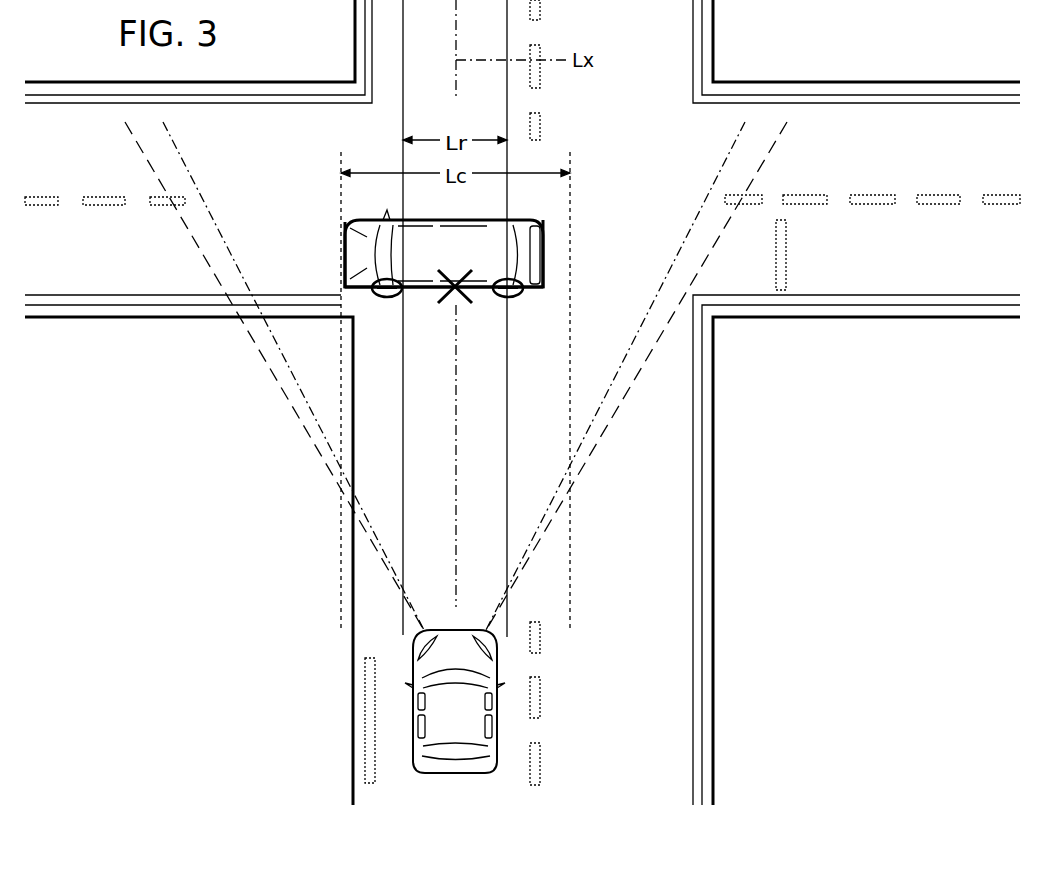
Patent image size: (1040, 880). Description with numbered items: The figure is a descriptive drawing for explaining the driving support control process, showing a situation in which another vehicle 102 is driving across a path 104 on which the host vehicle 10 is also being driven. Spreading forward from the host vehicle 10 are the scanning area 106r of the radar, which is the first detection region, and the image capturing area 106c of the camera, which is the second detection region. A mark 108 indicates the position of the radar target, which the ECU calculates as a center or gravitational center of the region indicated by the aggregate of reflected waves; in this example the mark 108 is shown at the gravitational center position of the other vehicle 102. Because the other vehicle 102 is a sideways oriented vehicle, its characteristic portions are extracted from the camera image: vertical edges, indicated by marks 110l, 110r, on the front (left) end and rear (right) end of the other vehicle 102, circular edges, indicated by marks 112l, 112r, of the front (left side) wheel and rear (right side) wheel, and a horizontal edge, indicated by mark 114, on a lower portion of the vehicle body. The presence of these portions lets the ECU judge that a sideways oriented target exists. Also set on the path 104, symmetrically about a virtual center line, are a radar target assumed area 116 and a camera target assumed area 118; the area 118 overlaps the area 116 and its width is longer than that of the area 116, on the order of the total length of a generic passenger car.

The host vehicle 10 is at (467, 705).
The other vehicle 102 is at (497, 250).
The path 104 is at (392, 707).
The image capturing area 106c is at (631, 386).
The scanning area 106r is at (590, 437).
The mark indicating the position Por of the radar target 108 is at (445, 302).
The mark indicating vertical edge on front end of other vehicle 110l is at (343, 233).
The mark indicating vertical edge on rear end of other vehicle 110r is at (545, 223).
The mark indicating circular edge of front wheel 112l is at (373, 296).
The mark indicating circular edge of rear wheel 112r is at (512, 298).
The mark indicating horizontal edge on lower portion of vehicle body 114 is at (414, 291).
The radar target assumed area 116 is at (410, 438).
The camera target assumed area 118 is at (345, 552).